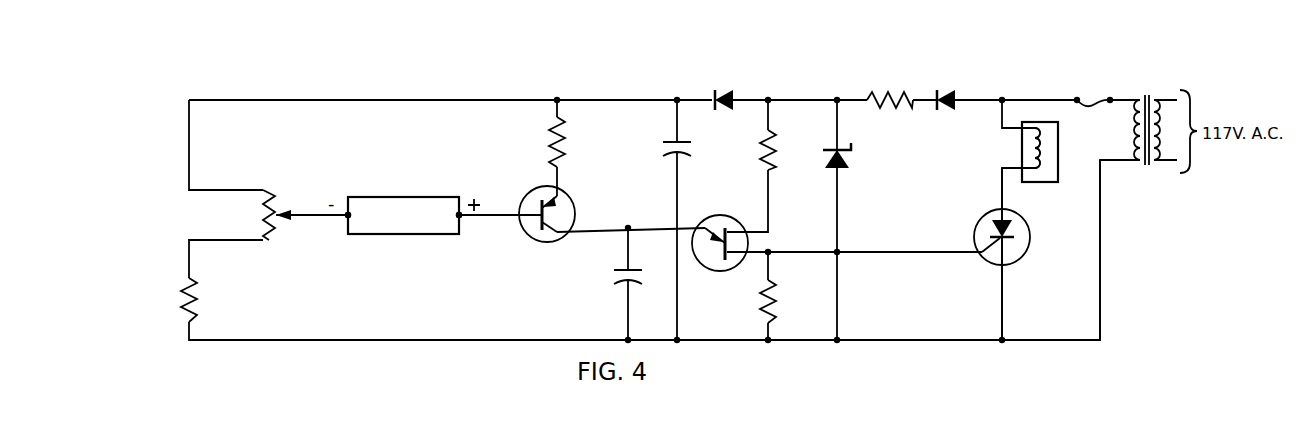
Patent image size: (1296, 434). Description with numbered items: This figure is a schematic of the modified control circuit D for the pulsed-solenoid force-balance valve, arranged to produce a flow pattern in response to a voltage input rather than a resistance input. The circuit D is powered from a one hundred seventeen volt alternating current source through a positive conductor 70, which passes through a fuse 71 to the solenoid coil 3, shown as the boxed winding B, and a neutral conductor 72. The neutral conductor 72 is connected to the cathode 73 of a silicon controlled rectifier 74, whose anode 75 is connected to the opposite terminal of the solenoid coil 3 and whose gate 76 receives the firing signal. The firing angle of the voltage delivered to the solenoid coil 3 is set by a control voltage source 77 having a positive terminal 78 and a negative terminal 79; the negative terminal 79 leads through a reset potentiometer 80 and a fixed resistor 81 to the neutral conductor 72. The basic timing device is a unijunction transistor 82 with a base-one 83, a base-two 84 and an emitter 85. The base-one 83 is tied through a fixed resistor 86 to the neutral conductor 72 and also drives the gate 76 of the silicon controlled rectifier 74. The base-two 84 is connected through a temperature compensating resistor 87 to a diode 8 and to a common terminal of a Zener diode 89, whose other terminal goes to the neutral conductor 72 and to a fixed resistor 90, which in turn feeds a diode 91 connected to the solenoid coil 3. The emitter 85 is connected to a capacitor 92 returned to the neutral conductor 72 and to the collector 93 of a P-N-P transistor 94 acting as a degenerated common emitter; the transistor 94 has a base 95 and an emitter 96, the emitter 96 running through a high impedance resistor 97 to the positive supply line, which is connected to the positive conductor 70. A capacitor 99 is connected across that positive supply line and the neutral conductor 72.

The solenoid coil 3 is at (1040, 182).
The diode 8 is at (735, 95).
The positive conductor 70 is at (1123, 98).
The fuse 71 is at (1083, 96).
The neutral conductor 72 is at (1100, 300).
The cathode 73 is at (1012, 247).
The silicon controlled rectifier 74 is at (1030, 238).
The anode 75 is at (993, 214).
The gate 76 is at (990, 243).
The control voltage source 77 is at (416, 197).
The positive terminal 78 is at (484, 218).
The negative terminal 79 is at (335, 218).
The reset potentiometer 80 is at (279, 226).
The fixed resistor 81 is at (196, 312).
The unijunction transistor 82 is at (718, 269).
The base-1 83 is at (734, 226).
The base-2 84 is at (736, 268).
The emitter 85 is at (722, 226).
The fixed resistor 86 is at (777, 290).
The temperature compensating resistor 87 is at (777, 165).
The Zener diode 89 is at (850, 168).
The fixed resistor 90 is at (887, 95).
The diode 91 is at (953, 95).
The capacitor 92 is at (613, 270).
The collector 93 is at (552, 241).
The P-N-P transistor 94 is at (530, 240).
The base 95 is at (538, 200).
The emitter 96 is at (574, 206).
The high impedance resistor 97 is at (563, 158).
The capacitor 99 is at (665, 147).
The relay coil B is at (1062, 168).
The control circuit D is at (446, 97).